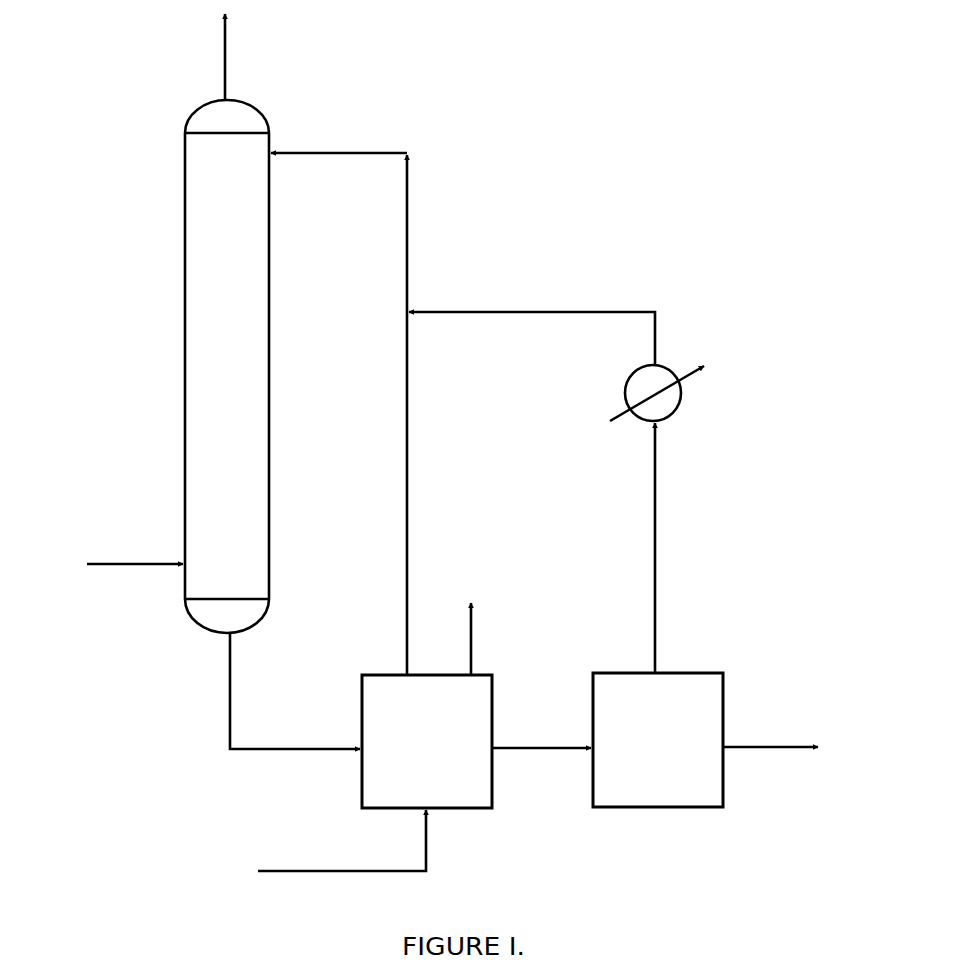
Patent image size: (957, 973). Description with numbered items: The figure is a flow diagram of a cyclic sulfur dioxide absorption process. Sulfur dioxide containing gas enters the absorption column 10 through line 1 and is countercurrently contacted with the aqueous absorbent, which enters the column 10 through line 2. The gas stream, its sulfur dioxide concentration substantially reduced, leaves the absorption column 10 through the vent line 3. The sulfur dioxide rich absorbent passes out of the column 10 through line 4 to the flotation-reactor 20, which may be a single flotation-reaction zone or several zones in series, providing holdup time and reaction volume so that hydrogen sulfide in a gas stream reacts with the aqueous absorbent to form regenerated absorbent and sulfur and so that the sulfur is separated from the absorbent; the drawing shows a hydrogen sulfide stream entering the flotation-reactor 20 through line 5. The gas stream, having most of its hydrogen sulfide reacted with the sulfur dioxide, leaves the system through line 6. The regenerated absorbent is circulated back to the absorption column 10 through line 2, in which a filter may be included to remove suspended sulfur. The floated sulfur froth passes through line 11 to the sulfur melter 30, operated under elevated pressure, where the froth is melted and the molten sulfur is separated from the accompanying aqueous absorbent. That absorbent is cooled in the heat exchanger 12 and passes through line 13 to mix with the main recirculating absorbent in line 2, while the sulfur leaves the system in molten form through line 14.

The line 1 is at (124, 563).
The line 2 is at (331, 153).
The vent line 3 is at (225, 77).
The line 4 is at (280, 748).
The H2S feed stream 5 is at (302, 870).
The line 6 is at (473, 661).
The absorption column 10 is at (236, 326).
The line 11 is at (517, 748).
The heat exchanger 12 is at (682, 398).
The line 13 is at (487, 312).
The line 14 is at (756, 746).
The flotation-reactor 20 is at (440, 790).
The sulfur melter 30 is at (673, 789).